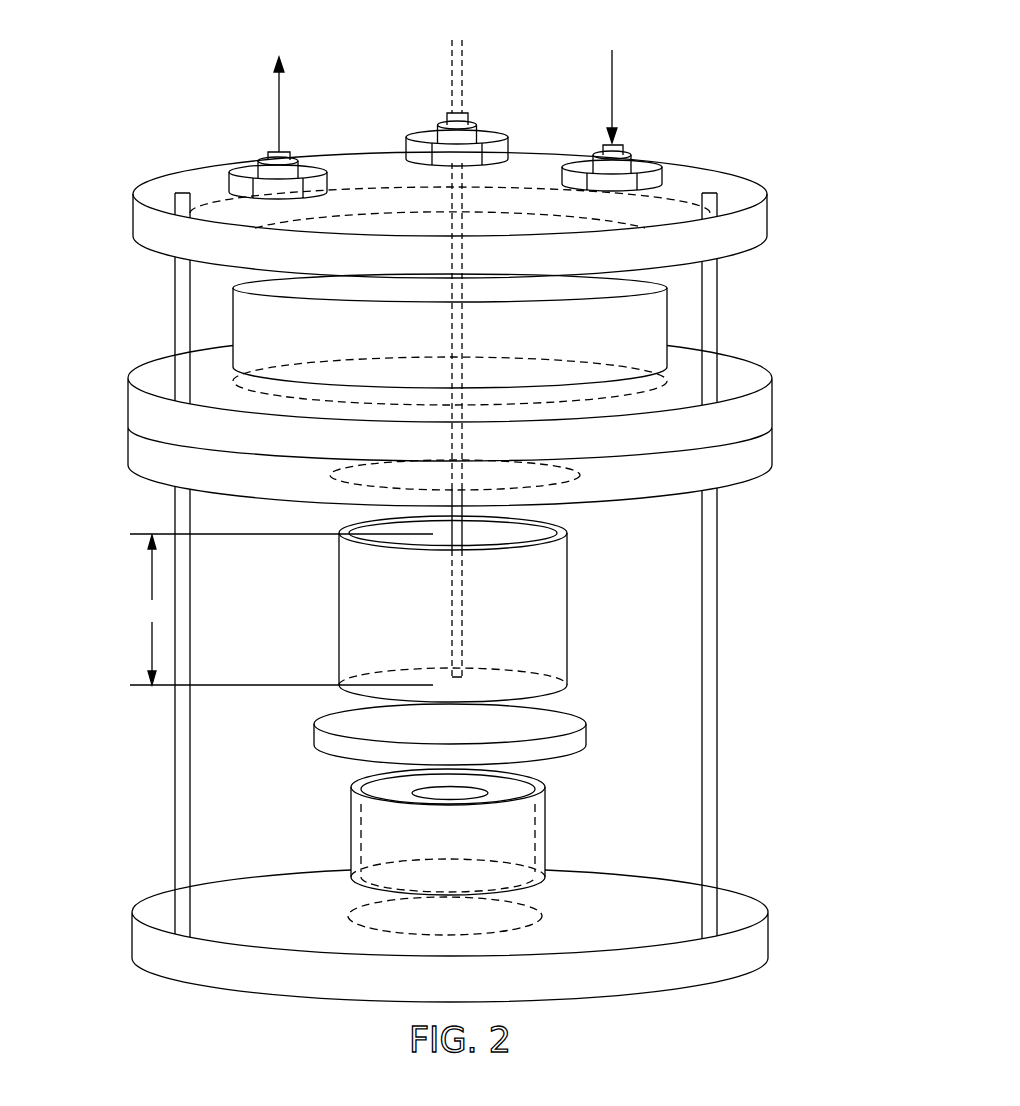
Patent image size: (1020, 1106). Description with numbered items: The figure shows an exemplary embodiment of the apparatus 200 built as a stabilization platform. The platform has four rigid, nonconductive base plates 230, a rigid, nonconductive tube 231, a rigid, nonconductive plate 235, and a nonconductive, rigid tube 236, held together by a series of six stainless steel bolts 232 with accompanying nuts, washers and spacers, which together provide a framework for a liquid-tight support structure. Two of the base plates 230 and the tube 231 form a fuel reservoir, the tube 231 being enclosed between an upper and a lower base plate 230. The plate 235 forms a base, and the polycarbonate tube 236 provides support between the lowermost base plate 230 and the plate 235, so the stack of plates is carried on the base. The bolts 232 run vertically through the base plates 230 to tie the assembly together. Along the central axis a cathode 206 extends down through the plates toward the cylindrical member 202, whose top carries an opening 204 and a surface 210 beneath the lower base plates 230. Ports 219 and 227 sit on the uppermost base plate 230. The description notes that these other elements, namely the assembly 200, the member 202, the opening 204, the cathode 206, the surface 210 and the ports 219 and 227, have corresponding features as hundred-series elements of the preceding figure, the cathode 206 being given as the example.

The deposition system 200 is at (111, 43).
The crucible 202 is at (467, 605).
The opening 204 is at (377, 531).
The cathode 206 is at (466, 68).
The top surface 210 is at (498, 532).
The outlet port 219 is at (250, 162).
The inlet port 227 is at (624, 148).
The base plates 230 is at (131, 212).
The tube 231 is at (670, 325).
The stainless steel bolts 232 is at (174, 322).
The plate 235 is at (316, 738).
The tube 236 is at (547, 832).